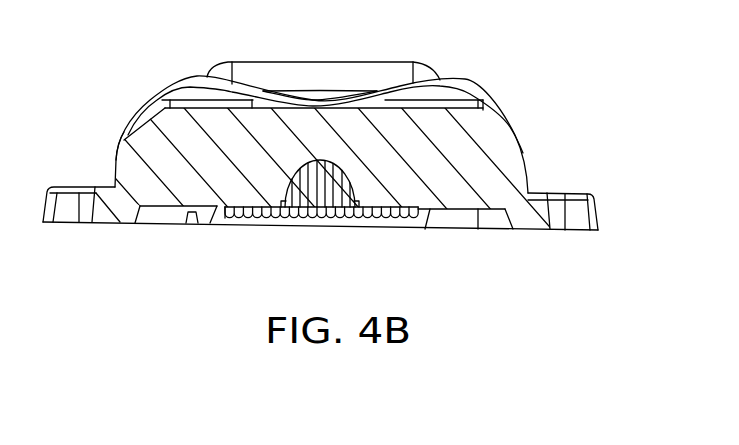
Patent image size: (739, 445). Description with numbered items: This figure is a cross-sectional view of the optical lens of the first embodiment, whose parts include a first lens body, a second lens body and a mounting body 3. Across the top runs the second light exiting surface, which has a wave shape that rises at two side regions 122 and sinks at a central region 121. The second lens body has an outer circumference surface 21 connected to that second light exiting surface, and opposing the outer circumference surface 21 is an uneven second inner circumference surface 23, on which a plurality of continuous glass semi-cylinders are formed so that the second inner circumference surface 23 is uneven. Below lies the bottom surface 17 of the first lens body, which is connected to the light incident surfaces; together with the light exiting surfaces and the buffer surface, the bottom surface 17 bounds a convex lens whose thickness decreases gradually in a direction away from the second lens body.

The mounting body 3 is at (610, 199).
The side regions 122 is at (202, 77).
The outer circumference surface 21 is at (323, 60).
The central region 121 is at (312, 97).
The second inner circumference surface 23 is at (322, 208).
The bottom surface 17 is at (478, 230).